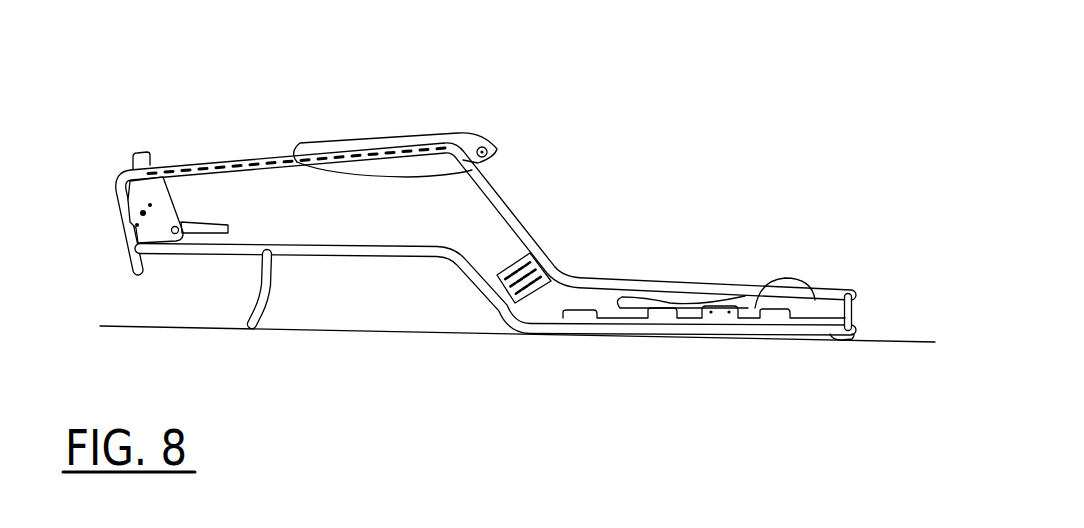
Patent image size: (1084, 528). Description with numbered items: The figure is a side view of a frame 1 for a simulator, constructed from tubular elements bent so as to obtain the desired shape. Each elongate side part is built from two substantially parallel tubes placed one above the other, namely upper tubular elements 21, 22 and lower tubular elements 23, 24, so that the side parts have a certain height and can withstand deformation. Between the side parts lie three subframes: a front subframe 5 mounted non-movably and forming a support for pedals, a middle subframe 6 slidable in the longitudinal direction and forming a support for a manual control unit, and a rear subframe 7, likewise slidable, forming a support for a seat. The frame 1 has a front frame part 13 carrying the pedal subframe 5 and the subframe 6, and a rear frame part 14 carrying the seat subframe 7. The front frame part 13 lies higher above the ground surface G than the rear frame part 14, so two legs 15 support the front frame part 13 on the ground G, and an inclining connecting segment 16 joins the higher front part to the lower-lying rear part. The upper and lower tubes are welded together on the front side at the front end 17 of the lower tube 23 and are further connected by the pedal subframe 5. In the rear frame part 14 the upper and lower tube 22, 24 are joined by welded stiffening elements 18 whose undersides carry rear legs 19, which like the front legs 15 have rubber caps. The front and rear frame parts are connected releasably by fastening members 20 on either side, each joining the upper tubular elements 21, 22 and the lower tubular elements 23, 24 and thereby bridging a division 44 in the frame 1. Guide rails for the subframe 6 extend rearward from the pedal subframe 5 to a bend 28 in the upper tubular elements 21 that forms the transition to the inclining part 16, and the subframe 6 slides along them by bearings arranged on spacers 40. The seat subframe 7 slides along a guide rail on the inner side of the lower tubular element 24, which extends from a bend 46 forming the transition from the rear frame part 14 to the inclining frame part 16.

The frame 1 is at (577, 212).
The front subframe 5 is at (162, 225).
The middle subframe 6 is at (408, 168).
The rear subframe 7 is at (750, 303).
The front frame part 13 is at (355, 262).
The rear frame part 14 is at (802, 266).
The legs 15 is at (263, 307).
The inclining connecting segment 16 is at (520, 206).
The front end 17 is at (133, 254).
The stiffening elements 18 is at (850, 312).
The rear legs 19 is at (843, 341).
The fastening members 20 is at (535, 305).
The upper tubular element 21 is at (150, 167).
The upper tubular element 22 is at (707, 288).
The lower tubular element 23 is at (197, 252).
The lower tubular element 24 is at (738, 327).
The bend 28 is at (447, 148).
The spacers 40 is at (427, 133).
The division 44 is at (555, 263).
The bend 46 is at (522, 322).
The ground surface G is at (900, 340).